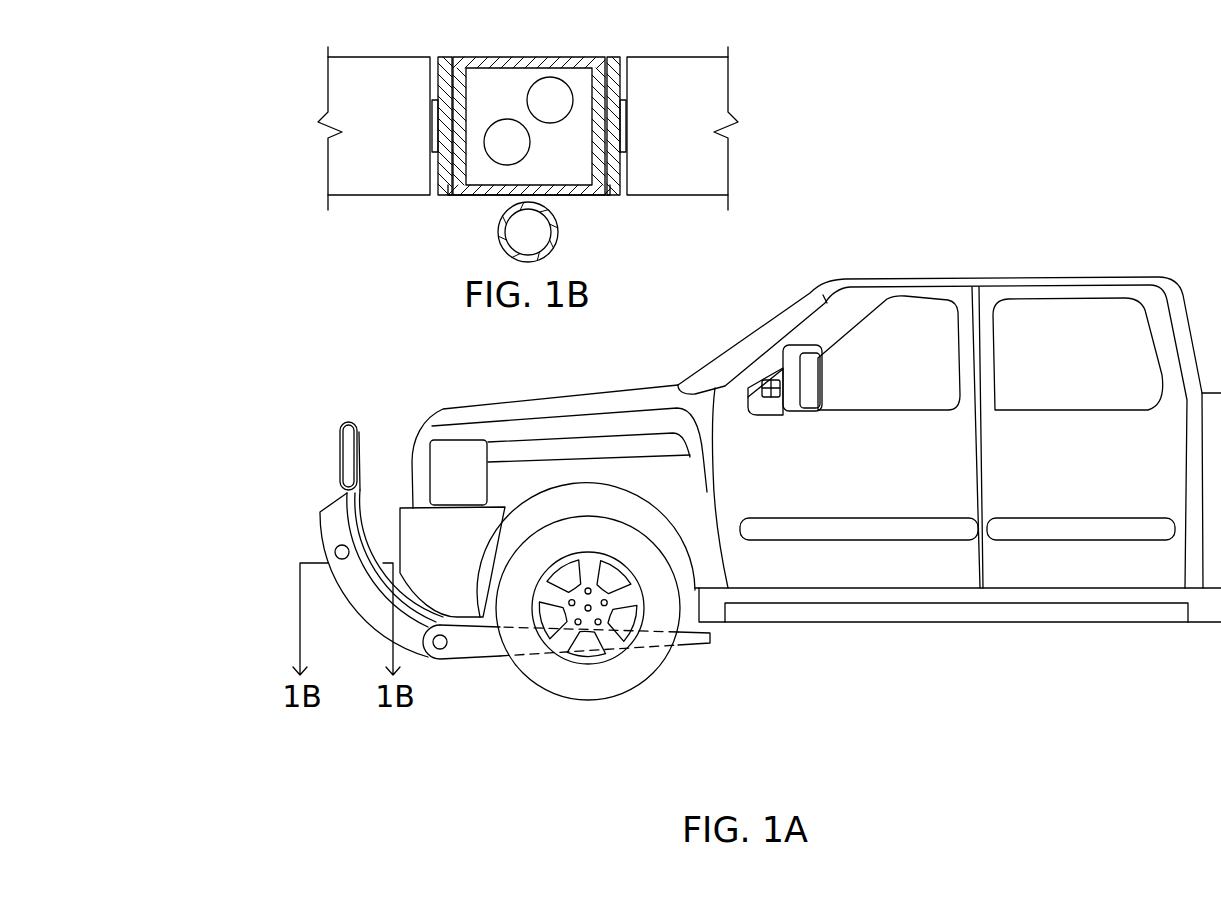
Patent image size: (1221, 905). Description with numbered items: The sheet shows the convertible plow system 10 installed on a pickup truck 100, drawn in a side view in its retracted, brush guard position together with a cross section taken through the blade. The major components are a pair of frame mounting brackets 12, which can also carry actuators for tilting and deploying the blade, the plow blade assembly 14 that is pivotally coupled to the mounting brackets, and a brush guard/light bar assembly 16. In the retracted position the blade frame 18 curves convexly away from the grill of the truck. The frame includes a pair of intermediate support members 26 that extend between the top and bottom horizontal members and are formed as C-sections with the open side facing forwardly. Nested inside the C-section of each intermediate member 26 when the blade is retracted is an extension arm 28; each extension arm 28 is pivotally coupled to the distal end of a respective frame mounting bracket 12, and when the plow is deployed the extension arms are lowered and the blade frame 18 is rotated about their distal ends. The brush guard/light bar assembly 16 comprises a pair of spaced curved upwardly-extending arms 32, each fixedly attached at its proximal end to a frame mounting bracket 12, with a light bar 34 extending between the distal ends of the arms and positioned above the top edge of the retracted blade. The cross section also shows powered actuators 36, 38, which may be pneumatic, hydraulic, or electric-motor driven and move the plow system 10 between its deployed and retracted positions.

In FIG. 1A, the plow system 10 is at (483, 536).
In FIG. 1A, the frame mounting bracket 12 is at (470, 645).
In FIG. 1A, the plow blade assembly 14 is at (350, 590).
In FIG. 1A, the brush guard/light bar assembly 16 is at (347, 435).
In FIG. 1A, the blade frame 18 is at (367, 598).
In FIG. 1B, the intermediate support member 26 is at (587, 197).
In FIG. 1B, the extension arm 28 is at (578, 62).
In FIG. 1A, the curved upwardly-extending arm 32 is at (358, 504).
In FIG. 1A, the light bar 34 is at (345, 453).
In FIG. 1B, the powered actuator 36 is at (507, 138).
In FIG. 1B, the powered actuator 38 is at (543, 98).
In FIG. 1A, the vehicle 100 is at (1122, 244).